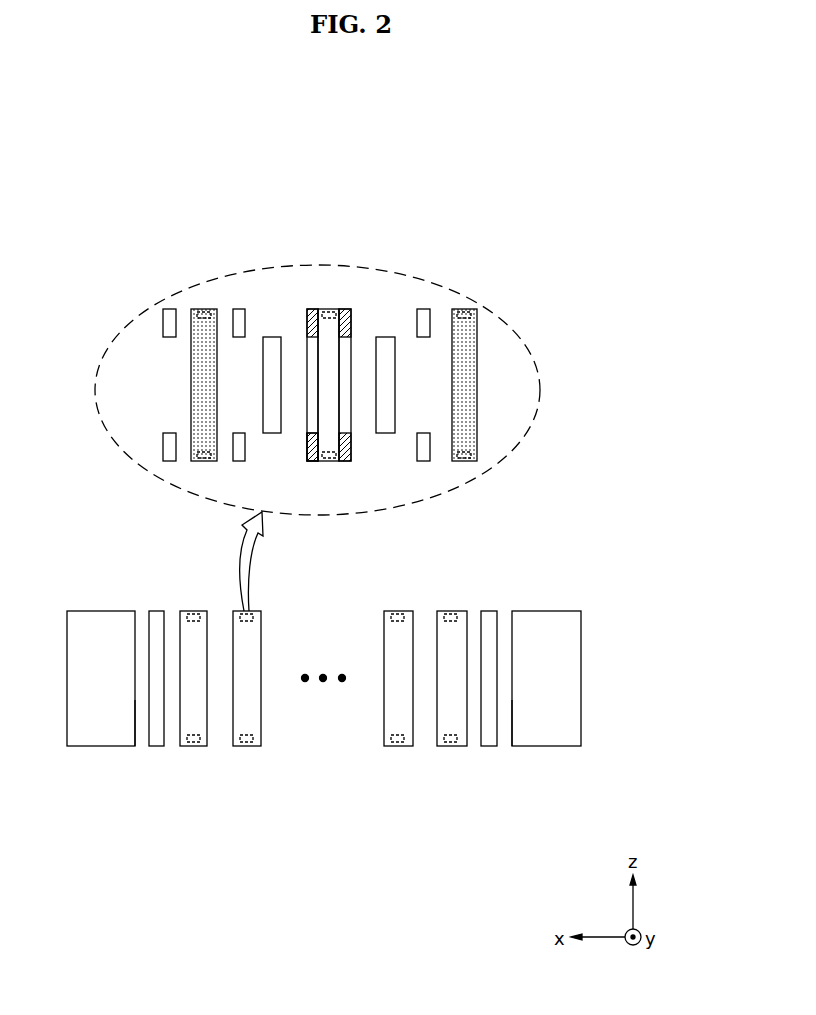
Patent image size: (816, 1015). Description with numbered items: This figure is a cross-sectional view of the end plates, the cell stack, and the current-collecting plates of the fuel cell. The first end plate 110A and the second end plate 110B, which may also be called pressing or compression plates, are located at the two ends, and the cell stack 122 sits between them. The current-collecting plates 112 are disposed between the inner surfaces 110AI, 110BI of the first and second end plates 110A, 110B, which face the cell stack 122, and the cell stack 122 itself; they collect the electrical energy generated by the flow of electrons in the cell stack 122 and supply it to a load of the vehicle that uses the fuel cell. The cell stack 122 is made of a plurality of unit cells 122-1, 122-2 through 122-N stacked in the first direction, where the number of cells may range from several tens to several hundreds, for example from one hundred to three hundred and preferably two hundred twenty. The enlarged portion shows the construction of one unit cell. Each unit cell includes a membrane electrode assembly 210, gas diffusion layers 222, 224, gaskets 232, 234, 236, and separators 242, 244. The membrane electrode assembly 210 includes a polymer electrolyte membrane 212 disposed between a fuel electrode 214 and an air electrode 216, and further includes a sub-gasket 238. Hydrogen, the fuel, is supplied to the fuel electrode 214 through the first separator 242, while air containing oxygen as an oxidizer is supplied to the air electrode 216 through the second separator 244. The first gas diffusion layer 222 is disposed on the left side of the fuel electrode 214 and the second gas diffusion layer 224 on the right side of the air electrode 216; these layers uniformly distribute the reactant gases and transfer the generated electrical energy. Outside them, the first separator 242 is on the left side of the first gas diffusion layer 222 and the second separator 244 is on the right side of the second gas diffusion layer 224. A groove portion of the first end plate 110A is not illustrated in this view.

The first end plate 110A is at (100, 611).
The inner surface of first end plate 110AI is at (135, 740).
The second end plate 110B is at (548, 611).
The inner surface of second end plate 110BI is at (512, 740).
The current-collecting plate 112 is at (156, 611).
The cell stack 122 is at (324, 729).
The first unit cell 122-1 is at (186, 746).
The second unit cell 122-2 is at (257, 746).
The Nth unit cell 122-N is at (458, 706).
The membrane electrode assembly 210 is at (365, 170).
The polymer electrolyte membrane 212 is at (329, 345).
The fuel electrode 214 is at (310, 358).
The air electrode 216 is at (348, 358).
The first gas diffusion layer 222 is at (270, 337).
The second gas diffusion layer 224 is at (385, 337).
The gasket 232 is at (238, 309).
The gasket 234 is at (170, 309).
The gasket 236 is at (424, 309).
The sub-gasket 238 is at (307, 452).
The first separator 242 is at (200, 309).
The second separator 244 is at (463, 309).